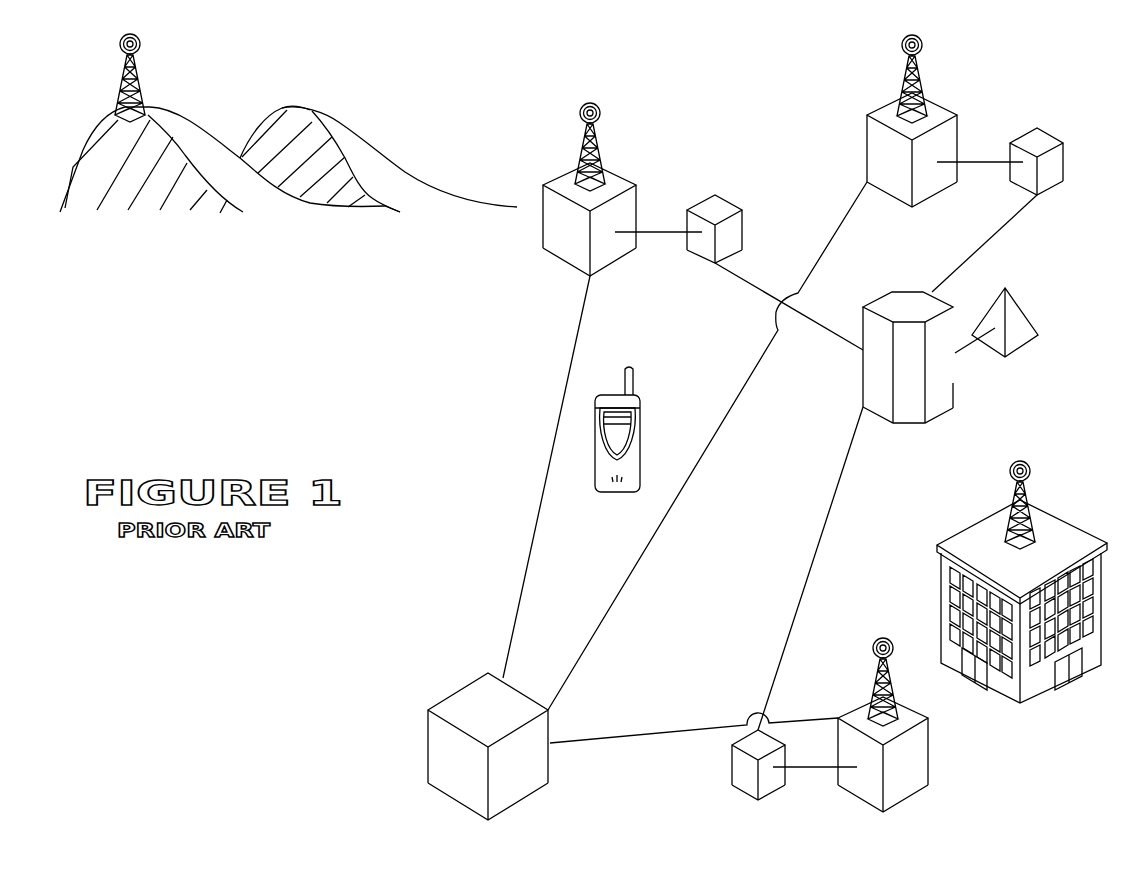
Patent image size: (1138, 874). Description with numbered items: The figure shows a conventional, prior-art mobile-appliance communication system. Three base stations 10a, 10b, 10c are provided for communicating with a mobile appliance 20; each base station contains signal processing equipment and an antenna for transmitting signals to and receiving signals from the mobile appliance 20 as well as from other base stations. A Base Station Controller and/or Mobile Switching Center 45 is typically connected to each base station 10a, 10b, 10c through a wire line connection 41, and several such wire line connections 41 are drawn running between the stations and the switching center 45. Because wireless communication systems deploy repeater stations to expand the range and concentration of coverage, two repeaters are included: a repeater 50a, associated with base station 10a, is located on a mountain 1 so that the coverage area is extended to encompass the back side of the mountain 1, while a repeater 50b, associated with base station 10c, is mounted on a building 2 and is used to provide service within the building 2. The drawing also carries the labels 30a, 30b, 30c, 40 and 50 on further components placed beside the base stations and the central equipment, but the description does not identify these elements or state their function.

The mountain 1 is at (82, 148).
The building 2 is at (1063, 695).
The base station 10a is at (578, 191).
The base station 10b is at (903, 121).
The base station 10c is at (898, 728).
The mobile appliance 20 is at (642, 417).
The base station controller 30a is at (715, 195).
The base station controller 30b is at (1037, 128).
The base station controller 30c is at (758, 800).
The mobile positioning center (MPC) 40 is at (1010, 293).
The wire line connection 41 is at (770, 471).
The Mobile Switching Center 45 is at (487, 677).
The geolocation control station (GCS) 50 is at (907, 292).
The repeater 50a is at (152, 88).
The repeater 50b is at (1057, 505).